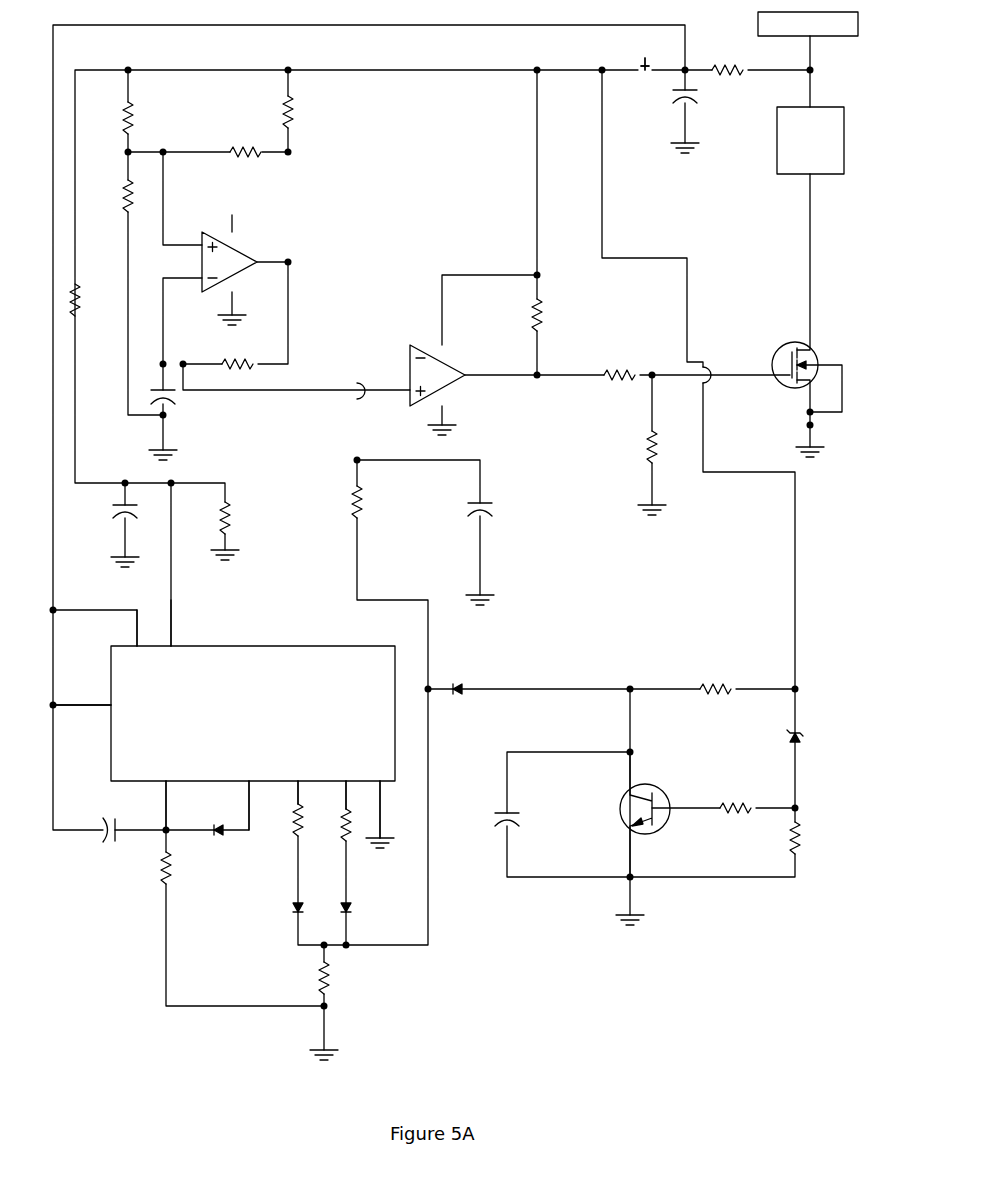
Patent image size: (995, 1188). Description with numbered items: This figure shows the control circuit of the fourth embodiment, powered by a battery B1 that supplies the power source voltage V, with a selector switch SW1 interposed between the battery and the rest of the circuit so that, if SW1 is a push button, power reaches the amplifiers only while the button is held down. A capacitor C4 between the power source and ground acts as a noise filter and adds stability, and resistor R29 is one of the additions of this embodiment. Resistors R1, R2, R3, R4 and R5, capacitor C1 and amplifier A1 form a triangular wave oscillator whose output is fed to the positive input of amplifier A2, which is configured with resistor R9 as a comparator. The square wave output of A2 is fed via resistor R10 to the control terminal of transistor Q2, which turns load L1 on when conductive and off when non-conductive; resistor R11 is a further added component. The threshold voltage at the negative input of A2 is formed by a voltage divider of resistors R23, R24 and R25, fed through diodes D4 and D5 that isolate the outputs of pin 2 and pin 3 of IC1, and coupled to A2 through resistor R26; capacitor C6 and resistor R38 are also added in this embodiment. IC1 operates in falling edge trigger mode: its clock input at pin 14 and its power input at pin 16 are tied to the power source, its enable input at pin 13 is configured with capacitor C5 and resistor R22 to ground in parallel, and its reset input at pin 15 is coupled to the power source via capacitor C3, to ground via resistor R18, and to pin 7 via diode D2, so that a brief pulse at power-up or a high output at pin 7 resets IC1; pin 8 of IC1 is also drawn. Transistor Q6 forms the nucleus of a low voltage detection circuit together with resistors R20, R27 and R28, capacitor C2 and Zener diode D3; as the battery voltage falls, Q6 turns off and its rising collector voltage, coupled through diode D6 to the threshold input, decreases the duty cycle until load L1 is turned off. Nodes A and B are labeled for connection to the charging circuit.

The resistor R1 is at (115, 118).
The resistor R2 is at (115, 196).
The resistor R3 is at (245, 140).
The resistor R4 is at (306, 112).
The resistor R5 is at (237, 352).
The resistor R9 is at (554, 315).
The resistor R10 is at (621, 363).
The resistor R11 is at (627, 447).
The resistor R18 is at (144, 868).
The resistor R20 is at (740, 796).
The resistor R22 is at (246, 518).
The resistor R23 is at (293, 832).
The resistor R24 is at (342, 830).
The resistor R25 is at (304, 978).
The resistor R26 is at (337, 502).
The resistor R27 is at (717, 674).
The resistor R28 is at (816, 838).
The resistor R29 is at (729, 59).
The resistor R38 is at (97, 300).
The capacitor C1 is at (181, 403).
The capacitor C2 is at (524, 821).
The capacitor C3 is at (109, 819).
The capacitor C4 is at (670, 102).
The capacitor C5 is at (108, 514).
The capacitor C6 is at (461, 512).
The diode D2 is at (223, 819).
The Zener diode D3 is at (811, 739).
The diode D4 is at (282, 909).
The diode D5 is at (363, 909).
The diode D6 is at (454, 677).
The transistor Q2 is at (784, 358).
The transistor Q6 is at (653, 814).
The amplifier A1 is at (248, 268).
The amplifier A2 is at (450, 384).
The integrated circuit IC1 is at (273, 646).
The selector switch SW1 is at (640, 49).
The load L1 is at (777, 138).
The battery B1 is at (822, 36).
The node B is at (808, 72).
The node A is at (348, 947).
The power source voltage V is at (233, 215).
The CLOCK input pin 14 is at (137, 643).
The ENABLE input pin 13 is at (177, 638).
The power input pin 16 is at (96, 705).
The RESET input pin 15 is at (167, 795).
The output pin 7 is at (249, 795).
The output pin 3 is at (297, 782).
The output pin 2 is at (344, 784).
The IC1 pin 8 is at (381, 799).